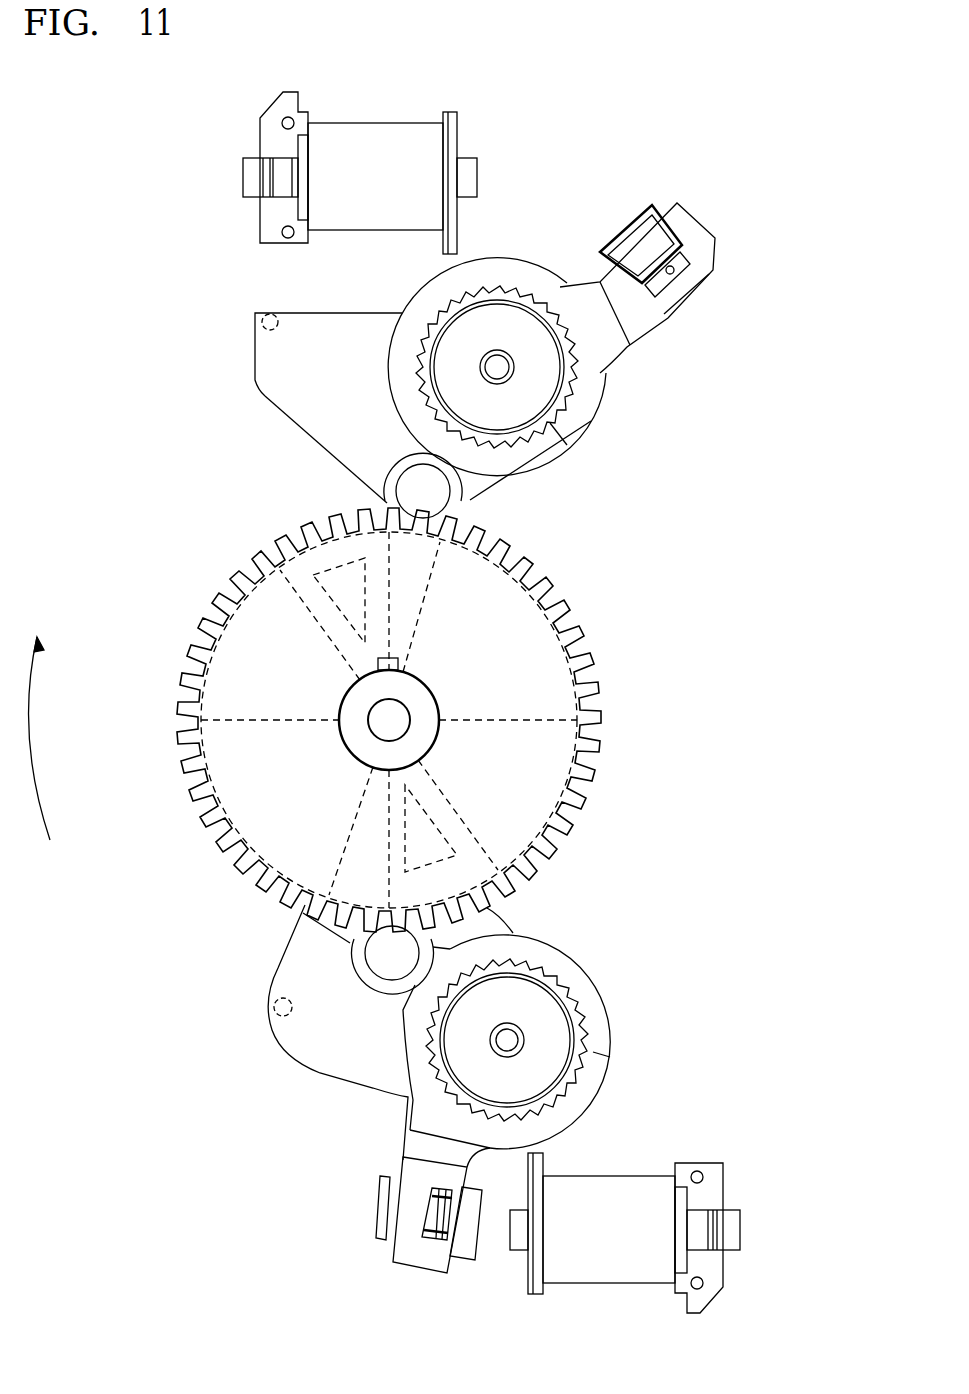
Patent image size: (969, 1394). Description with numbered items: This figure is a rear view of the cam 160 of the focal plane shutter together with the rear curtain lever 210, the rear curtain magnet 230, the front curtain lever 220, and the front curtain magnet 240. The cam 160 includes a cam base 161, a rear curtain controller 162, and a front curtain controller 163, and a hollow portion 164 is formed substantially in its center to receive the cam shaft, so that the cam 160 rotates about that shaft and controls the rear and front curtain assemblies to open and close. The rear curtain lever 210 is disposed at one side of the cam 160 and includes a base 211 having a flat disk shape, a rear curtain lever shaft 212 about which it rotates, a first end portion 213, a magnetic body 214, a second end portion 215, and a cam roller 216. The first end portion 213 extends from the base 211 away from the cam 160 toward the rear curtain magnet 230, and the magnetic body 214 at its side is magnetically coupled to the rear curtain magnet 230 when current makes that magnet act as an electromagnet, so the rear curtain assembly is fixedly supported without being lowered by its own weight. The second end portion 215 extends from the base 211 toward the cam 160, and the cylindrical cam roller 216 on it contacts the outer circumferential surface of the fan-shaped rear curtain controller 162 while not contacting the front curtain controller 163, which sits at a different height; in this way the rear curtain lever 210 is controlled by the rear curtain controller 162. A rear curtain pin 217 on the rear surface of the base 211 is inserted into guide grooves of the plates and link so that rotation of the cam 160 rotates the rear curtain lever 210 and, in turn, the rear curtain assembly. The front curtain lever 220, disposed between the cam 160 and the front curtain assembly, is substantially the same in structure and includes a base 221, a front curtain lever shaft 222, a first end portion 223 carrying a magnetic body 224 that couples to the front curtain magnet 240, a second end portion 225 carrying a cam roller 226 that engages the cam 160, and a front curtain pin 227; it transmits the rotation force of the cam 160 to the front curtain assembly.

The cam 160 is at (160, 660).
The cam base 161 is at (270, 822).
The rear curtain controller 162 is at (252, 648).
The front curtain controller 163 is at (283, 565).
The hollow portion 164 is at (385, 723).
The rear curtain lever 210 is at (622, 988).
The base 211 is at (318, 1028).
The rear curtain lever shaft 212 is at (510, 1040).
The first end portion 213 is at (395, 1247).
The magnetic body 214 is at (462, 1262).
The second end portion 215 is at (315, 950).
The cam roller 216 is at (392, 953).
The rear curtain pin 217 is at (275, 1012).
The front curtain lever 220 is at (598, 438).
The base 221 is at (295, 312).
The front curtain lever shaft 222 is at (500, 372).
The first end portion 223 is at (693, 233).
The magnetic body 224 is at (625, 223).
The second end portion 225 is at (325, 425).
The cam roller 226 is at (428, 492).
The front curtain pin 227 is at (262, 322).
The rear curtain magnet 230 is at (608, 1283).
The front curtain magnet 240 is at (373, 137).